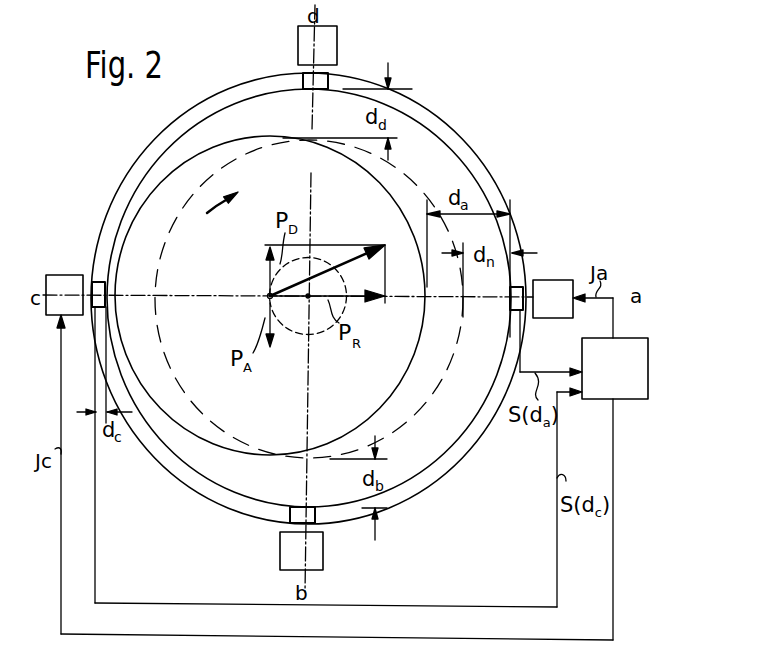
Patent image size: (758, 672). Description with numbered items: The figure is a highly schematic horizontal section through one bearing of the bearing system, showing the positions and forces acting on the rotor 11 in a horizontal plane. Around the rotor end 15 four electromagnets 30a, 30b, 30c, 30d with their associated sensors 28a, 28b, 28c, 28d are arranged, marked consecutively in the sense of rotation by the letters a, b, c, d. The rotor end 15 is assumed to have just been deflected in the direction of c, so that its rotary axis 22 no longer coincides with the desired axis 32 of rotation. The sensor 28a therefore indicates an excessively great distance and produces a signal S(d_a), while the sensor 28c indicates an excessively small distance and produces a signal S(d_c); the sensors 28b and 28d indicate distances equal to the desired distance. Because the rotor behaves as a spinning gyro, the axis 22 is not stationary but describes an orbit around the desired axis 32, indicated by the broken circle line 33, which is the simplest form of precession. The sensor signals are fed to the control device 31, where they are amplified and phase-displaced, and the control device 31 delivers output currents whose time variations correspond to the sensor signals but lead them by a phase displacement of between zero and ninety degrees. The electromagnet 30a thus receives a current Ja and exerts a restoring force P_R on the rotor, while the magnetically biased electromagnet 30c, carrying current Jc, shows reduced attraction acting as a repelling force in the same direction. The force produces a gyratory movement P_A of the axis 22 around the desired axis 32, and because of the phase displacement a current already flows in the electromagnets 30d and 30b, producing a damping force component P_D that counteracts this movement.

The rotor 11 is at (192, 455).
The rotor end 15 is at (228, 455).
The rotary axis of the rotor 22 is at (265, 298).
The sensor 28a is at (511, 310).
The sensor 28b is at (290, 516).
The sensor 28c is at (100, 282).
The sensor 28d is at (301, 76).
The electromagnet 30a is at (555, 290).
The electromagnet 30b is at (318, 555).
The electromagnet 30c is at (67, 282).
The electromagnet 30d is at (331, 40).
The control device 31 is at (635, 390).
The desired axis of rotation 32 is at (310, 301).
The broken circle line 33 is at (325, 262).